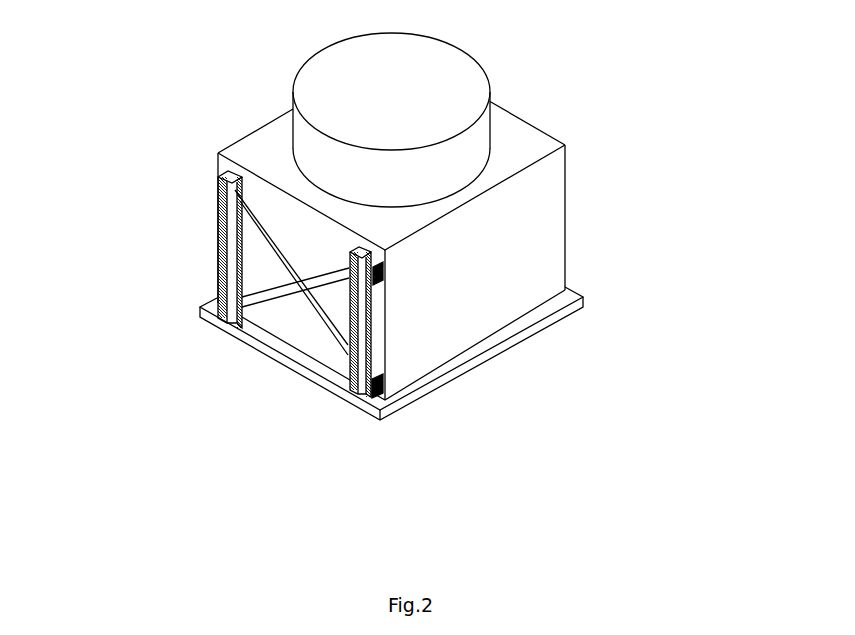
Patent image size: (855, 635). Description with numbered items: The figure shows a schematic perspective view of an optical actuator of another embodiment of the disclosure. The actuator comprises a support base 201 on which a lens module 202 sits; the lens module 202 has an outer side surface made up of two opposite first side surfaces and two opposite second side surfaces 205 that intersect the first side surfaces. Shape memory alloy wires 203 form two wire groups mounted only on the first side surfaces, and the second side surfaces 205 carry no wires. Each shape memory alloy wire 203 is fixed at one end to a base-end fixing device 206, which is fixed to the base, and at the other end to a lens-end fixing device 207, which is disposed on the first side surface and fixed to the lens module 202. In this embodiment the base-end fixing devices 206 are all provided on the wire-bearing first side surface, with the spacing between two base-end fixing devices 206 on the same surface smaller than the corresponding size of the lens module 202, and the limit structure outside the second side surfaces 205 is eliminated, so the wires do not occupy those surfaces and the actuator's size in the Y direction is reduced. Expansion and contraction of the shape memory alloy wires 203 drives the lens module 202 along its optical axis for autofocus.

The support base 201 is at (502, 312).
The lens module 202 is at (517, 119).
The shape memory alloy wires 203 is at (261, 355).
The second side surfaces 205 is at (460, 251).
The base-end fixing device 206 is at (137, 258).
The lens-end fixing device 207 is at (402, 383).